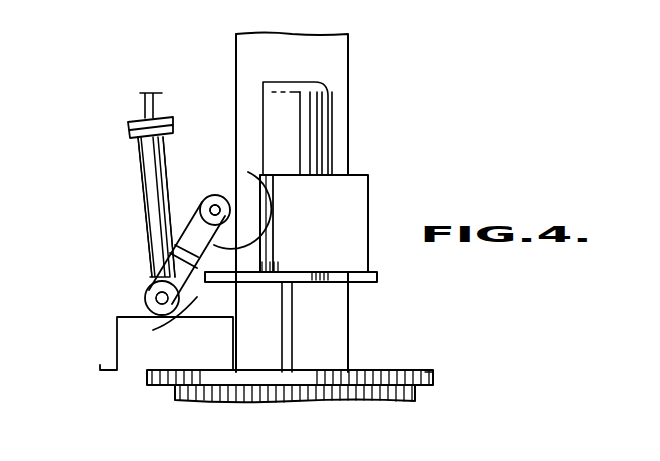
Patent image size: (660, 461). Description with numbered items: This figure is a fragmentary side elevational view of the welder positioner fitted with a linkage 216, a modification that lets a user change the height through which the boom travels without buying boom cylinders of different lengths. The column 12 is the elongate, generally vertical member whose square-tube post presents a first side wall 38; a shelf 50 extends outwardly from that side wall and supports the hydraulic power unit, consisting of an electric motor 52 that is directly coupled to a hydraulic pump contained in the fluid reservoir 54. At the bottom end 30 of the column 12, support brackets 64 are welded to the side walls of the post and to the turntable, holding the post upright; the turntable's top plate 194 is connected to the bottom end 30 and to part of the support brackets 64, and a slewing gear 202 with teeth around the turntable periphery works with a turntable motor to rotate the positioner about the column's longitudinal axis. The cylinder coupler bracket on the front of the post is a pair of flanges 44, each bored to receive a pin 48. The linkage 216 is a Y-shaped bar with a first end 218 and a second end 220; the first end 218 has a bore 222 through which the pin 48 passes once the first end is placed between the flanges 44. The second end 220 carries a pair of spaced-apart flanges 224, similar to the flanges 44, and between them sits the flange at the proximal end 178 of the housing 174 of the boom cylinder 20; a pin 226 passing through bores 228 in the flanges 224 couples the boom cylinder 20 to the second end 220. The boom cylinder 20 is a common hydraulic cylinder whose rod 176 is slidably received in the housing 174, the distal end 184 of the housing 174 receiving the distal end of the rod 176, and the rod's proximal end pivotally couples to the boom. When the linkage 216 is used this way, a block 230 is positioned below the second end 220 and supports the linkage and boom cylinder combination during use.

The column 12 is at (338, 60).
The boom cylinder 20 is at (147, 172).
The bottom end 30 is at (355, 380).
The first side wall 38 is at (247, 60).
The flanges 44 is at (215, 195).
The pin 48 is at (222, 212).
The shelf 50 is at (376, 276).
The electric motor 52 is at (327, 112).
The fluid reservoir 54 is at (369, 182).
The support brackets 64 is at (288, 332).
The housing 174 is at (168, 153).
The rod 176 is at (142, 100).
The proximal end 178 is at (186, 290).
The distal end 184 is at (134, 126).
The top plate 194 is at (448, 362).
The slewing gear 202 is at (243, 403).
The linkage 216 is at (222, 250).
The first end 218 is at (201, 213).
The second end 220 is at (182, 292).
The bore 222 is at (222, 210).
The flanges 224 is at (165, 262).
The pin 226 is at (160, 312).
The bores 228 is at (152, 289).
The block 230 is at (117, 370).